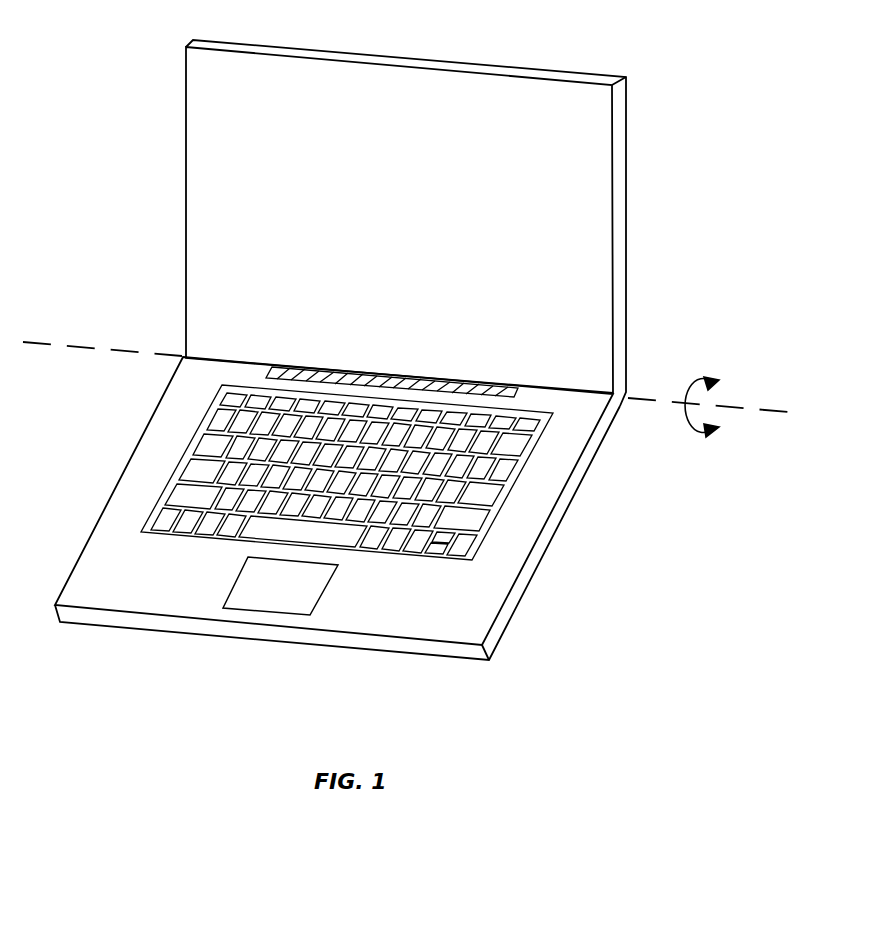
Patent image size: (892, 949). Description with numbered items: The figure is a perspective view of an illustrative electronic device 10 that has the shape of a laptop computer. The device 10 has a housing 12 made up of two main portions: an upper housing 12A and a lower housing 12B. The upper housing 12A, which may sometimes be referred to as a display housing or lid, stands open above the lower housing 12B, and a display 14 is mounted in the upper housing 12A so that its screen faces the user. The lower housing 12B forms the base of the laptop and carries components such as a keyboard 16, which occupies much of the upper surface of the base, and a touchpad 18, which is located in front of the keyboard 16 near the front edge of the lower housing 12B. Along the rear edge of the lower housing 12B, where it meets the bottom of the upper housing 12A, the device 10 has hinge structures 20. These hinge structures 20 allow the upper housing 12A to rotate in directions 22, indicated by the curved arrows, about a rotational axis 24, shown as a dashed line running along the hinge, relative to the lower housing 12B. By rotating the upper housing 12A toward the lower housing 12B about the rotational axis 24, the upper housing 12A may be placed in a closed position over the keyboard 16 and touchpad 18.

The electronic device 10 is at (405, 350).
The housing 12 is at (361, 368).
The upper housing 12A is at (396, 223).
The lower housing 12B is at (343, 524).
The display 14 is at (540, 210).
The keyboard 16 is at (482, 490).
The touchpad 18 is at (325, 597).
The hinge structures 20 is at (494, 386).
The directions 22 is at (690, 437).
The rotational axis 24 is at (78, 344).